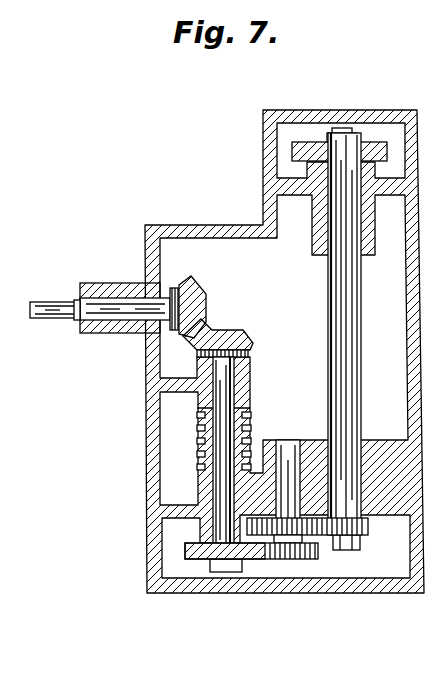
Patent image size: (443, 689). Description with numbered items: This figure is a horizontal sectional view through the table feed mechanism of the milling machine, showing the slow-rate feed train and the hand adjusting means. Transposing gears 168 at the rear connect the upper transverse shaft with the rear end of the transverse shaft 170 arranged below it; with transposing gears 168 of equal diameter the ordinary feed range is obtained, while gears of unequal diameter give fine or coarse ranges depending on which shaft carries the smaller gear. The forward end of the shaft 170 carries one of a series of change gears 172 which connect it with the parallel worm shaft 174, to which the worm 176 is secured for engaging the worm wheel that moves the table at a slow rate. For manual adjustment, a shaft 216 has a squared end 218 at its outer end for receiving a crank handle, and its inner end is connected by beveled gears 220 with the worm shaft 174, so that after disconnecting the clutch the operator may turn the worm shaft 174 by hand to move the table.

The transposing gears 168 is at (293, 152).
The transverse shaft 170 is at (330, 318).
The change gears 172 is at (285, 552).
The worm shaft 174 is at (230, 492).
The worm 176 is at (198, 440).
The shaft 216 is at (78, 336).
The squared end 218 is at (50, 302).
The beveled gears 220 is at (218, 330).